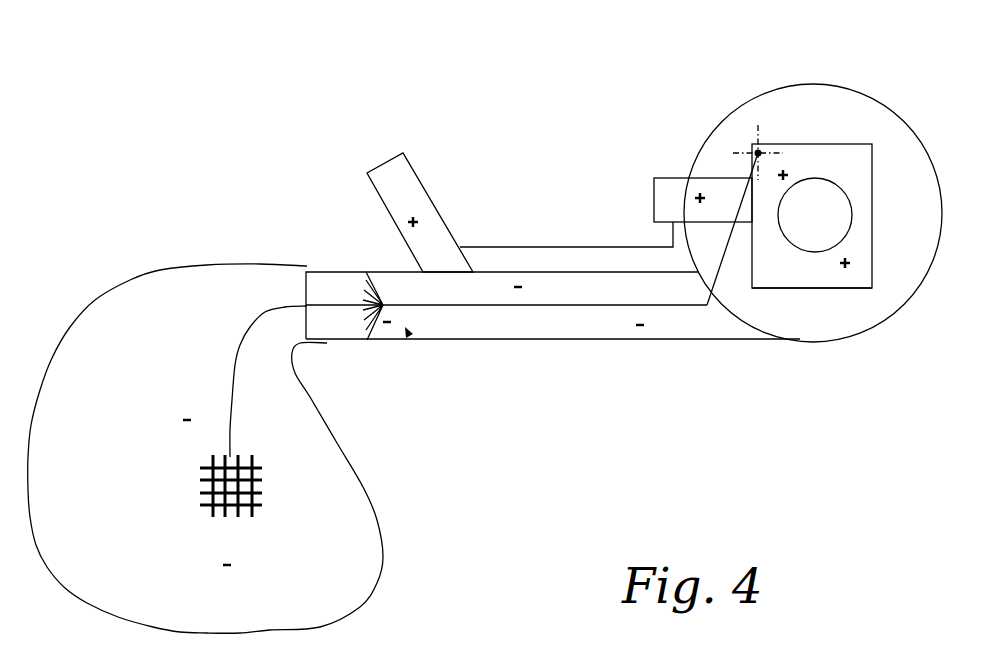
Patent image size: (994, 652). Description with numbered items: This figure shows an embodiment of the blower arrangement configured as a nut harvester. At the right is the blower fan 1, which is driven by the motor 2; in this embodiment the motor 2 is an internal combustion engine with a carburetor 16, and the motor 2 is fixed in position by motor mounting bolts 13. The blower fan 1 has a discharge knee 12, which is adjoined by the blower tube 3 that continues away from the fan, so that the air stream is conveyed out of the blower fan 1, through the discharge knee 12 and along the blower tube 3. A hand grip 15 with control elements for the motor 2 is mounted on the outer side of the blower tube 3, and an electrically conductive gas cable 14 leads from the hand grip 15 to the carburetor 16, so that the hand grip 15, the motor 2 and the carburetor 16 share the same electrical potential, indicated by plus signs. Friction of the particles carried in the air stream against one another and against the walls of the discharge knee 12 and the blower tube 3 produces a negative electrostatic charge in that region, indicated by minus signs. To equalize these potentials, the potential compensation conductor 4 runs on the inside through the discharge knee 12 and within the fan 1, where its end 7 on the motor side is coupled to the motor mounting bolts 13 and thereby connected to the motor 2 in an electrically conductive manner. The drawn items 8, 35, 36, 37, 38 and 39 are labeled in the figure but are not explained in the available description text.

The blower fan 1 is at (797, 100).
The motor 2 is at (827, 167).
The blower tube 3 is at (345, 270).
The potential compensation conductor 4 is at (563, 307).
The end on the motor side 7 is at (765, 122).
The discharge point / corona 8 is at (367, 327).
The discharge knee 12 is at (745, 310).
The motor mounting bolts 13 is at (756, 149).
The gas cable 14 is at (525, 245).
The hand grip 15 is at (422, 198).
The carburetor 16 is at (672, 185).
The cloud / field region 35 is at (377, 522).
The circular opening 36 is at (852, 215).
The grid electrode 37 is at (250, 508).
The direction of flow arrow 38 is at (411, 337).
The plate bottom edge 39 is at (837, 290).